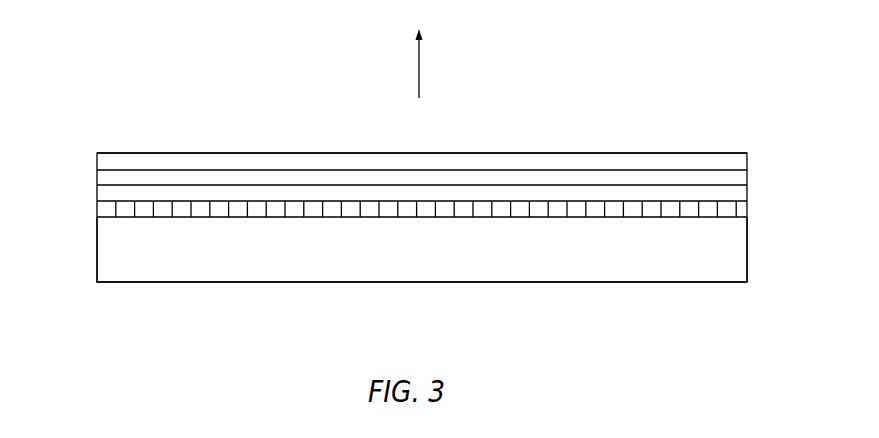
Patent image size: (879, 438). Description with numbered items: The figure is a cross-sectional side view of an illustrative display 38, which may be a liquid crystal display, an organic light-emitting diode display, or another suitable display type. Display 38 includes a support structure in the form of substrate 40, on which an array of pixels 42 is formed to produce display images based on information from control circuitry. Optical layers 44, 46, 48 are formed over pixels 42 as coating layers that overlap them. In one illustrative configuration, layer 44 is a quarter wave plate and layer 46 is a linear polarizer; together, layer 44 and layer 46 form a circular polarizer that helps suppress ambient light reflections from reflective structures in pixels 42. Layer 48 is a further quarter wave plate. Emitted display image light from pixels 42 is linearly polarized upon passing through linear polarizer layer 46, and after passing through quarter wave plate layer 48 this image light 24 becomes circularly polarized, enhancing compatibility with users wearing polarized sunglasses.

The image light 24 is at (418, 72).
The display 38 is at (768, 152).
The substrate 40 is at (100, 250).
The array of pixels 42 is at (100, 212).
The layer 44 is at (100, 192).
The layer 46 is at (100, 176).
The layer 48 is at (100, 160).